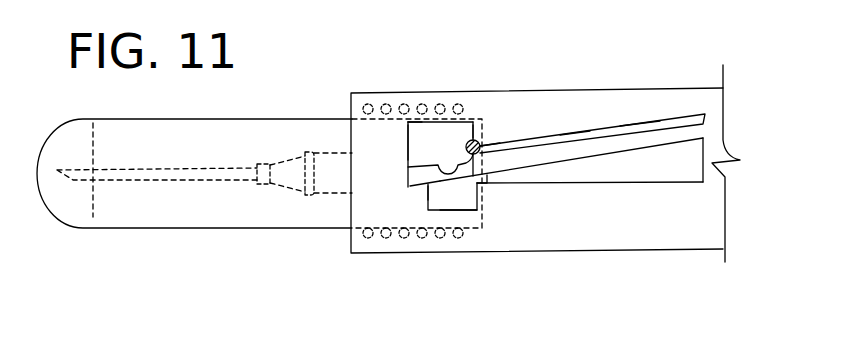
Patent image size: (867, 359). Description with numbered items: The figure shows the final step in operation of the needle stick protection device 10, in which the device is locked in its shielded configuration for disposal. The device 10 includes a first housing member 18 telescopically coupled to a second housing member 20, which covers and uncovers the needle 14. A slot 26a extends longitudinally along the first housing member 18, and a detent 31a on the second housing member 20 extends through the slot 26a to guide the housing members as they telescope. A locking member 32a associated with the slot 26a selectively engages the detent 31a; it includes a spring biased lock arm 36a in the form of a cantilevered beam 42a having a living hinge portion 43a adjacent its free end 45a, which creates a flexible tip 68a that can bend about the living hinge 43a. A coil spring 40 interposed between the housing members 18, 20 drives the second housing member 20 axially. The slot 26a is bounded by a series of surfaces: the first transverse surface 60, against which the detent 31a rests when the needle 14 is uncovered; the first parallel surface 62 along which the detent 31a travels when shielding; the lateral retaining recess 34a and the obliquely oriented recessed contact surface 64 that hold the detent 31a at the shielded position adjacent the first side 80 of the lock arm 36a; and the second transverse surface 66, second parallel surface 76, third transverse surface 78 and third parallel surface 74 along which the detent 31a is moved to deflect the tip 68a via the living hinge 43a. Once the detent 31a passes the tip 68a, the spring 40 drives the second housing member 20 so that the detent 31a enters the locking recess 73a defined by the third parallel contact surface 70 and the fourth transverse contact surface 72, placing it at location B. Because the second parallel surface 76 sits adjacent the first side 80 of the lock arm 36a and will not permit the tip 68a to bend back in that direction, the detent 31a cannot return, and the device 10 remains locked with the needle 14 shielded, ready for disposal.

The needle stick protection device 10 is at (676, 72).
The needle 14 is at (128, 168).
The first housing member 18 is at (352, 253).
The second housing member 20 is at (168, 228).
The slot 26a is at (580, 170).
The detent 31a is at (446, 211).
The locking member 32a is at (632, 158).
The lateral retaining recess 34a is at (438, 198).
The spring biased lock arm 36a is at (640, 128).
The coil spring 40 is at (399, 104).
The cantilevered beam 42a is at (590, 146).
The living hinge portion 43a is at (447, 122).
The free end 45a is at (406, 168).
The first transverse surface 60 is at (725, 115).
The first parallel surface 62 is at (422, 165).
The recessed contact surface 64 is at (481, 196).
The second transverse surface 66 is at (428, 212).
The tip 68a is at (405, 188).
The third parallel contact surface 70 is at (478, 142).
The fourth transverse contact surface 72 is at (489, 143).
The locking recess 73a is at (488, 142).
The third parallel surface 74 is at (411, 122).
The second parallel surface 76 is at (425, 195).
The third transverse surface 78 is at (407, 143).
The first side 80 is at (557, 160).
The location B is at (518, 140).